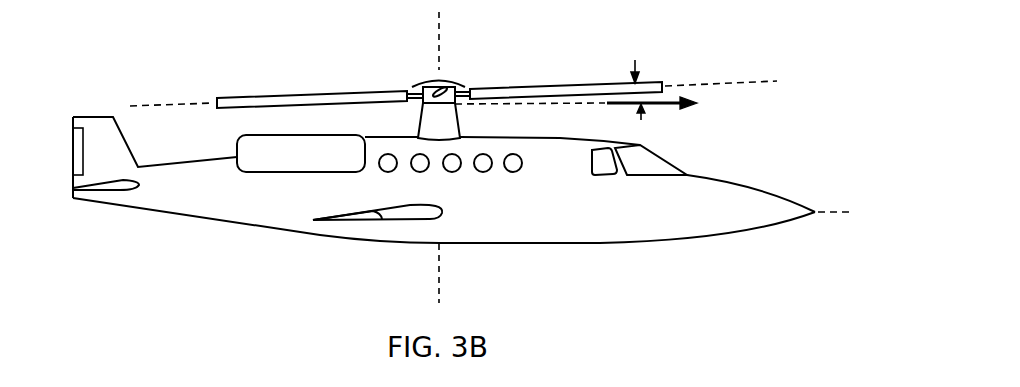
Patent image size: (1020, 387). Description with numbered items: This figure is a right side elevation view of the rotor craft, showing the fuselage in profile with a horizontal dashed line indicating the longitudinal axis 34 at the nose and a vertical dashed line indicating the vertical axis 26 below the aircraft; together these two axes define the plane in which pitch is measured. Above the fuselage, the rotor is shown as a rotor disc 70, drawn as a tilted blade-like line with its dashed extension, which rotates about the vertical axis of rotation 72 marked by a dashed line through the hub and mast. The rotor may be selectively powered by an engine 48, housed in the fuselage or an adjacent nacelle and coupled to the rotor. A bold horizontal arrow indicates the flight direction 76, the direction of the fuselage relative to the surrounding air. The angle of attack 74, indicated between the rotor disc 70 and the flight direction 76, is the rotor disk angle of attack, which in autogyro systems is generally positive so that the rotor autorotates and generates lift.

The vertical axis 26 is at (445, 273).
The longitudinal axis 34 is at (832, 210).
The engine 48 is at (287, 97).
The rotor disc 70 is at (748, 80).
The axis of rotation 72 is at (447, 30).
The angle of attack 74 is at (635, 60).
The flight direction 76 is at (667, 107).